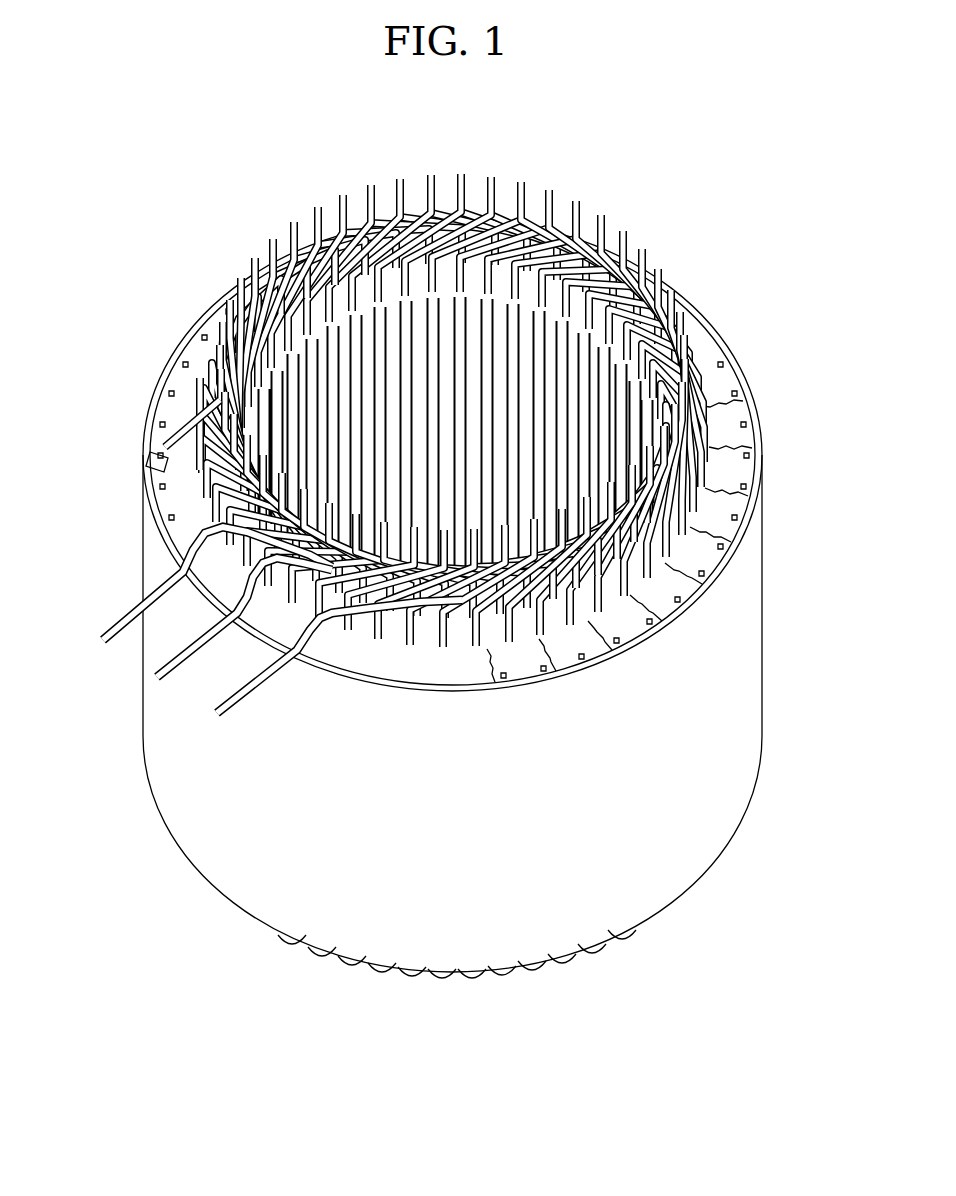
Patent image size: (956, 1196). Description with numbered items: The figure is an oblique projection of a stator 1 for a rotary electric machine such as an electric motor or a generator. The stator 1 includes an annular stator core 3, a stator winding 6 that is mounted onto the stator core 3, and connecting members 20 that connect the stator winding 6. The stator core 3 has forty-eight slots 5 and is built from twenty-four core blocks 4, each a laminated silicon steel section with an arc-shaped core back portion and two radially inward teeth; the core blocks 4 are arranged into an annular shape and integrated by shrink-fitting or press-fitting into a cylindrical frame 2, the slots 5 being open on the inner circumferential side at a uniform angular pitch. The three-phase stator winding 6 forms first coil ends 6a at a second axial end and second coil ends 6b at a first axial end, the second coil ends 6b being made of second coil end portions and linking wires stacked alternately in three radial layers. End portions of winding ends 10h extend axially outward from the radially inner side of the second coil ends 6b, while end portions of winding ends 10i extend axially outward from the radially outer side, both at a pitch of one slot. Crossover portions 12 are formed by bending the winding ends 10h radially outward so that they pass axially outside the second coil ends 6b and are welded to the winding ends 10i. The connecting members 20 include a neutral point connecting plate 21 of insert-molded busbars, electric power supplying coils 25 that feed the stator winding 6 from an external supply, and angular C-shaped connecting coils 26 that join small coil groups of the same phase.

The stator 1 is at (132, 116).
The cylindrical frame 2 is at (757, 401).
The stator core 3 is at (747, 374).
The core block 4 is at (737, 443).
The slot 5 is at (700, 558).
The stator winding 6 is at (453, 386).
The first coil ends 6a is at (358, 968).
The second coil ends 6b is at (463, 281).
The winding end 10h is at (538, 230).
The winding end 10i is at (568, 193).
The crossover portion 12 is at (474, 202).
The connecting members 20 is at (248, 538).
The neutral point connecting plate 21 is at (193, 416).
The electric power supplying coil 25 is at (123, 455).
The connecting coil 26 is at (193, 396).